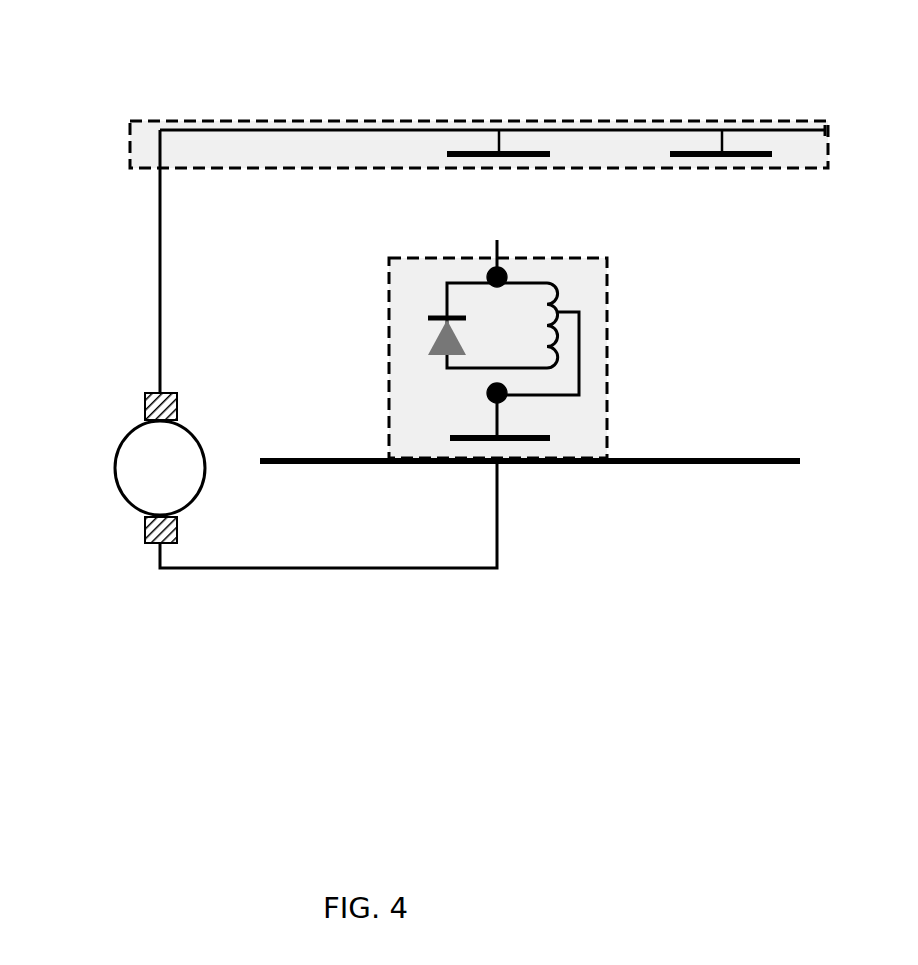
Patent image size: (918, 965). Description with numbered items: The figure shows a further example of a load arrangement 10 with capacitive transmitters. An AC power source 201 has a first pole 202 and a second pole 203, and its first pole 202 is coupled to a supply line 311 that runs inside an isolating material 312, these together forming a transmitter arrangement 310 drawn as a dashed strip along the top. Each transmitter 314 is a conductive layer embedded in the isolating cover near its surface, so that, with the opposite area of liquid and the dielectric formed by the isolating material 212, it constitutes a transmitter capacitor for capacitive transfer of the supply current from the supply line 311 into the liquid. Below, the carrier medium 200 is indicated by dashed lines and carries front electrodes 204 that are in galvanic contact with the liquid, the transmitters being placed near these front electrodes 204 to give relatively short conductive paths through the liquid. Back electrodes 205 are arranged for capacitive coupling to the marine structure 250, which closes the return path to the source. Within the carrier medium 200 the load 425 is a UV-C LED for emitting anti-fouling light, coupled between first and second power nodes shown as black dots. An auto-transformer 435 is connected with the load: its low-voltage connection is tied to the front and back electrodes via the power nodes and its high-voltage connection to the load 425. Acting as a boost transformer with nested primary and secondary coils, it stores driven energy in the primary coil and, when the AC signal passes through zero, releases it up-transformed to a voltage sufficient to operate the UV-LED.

The system 10 is at (222, 225).
The carrier medium 200 is at (388, 272).
The AC power source 201 is at (119, 455).
The first pole 202 is at (145, 408).
The resistor 203 is at (145, 530).
The front electrodes 204 is at (500, 250).
The back electrodes 205 is at (702, 442).
The isolating material 212 is at (426, 448).
The marine structure 250 is at (546, 468).
The transmitter arrangement 310 is at (439, 123).
The supply line 311 is at (159, 256).
The isolating material 312 is at (130, 140).
The transmitter 314 is at (710, 160).
The load 425 is at (388, 330).
The auto-transformer 435 is at (588, 297).